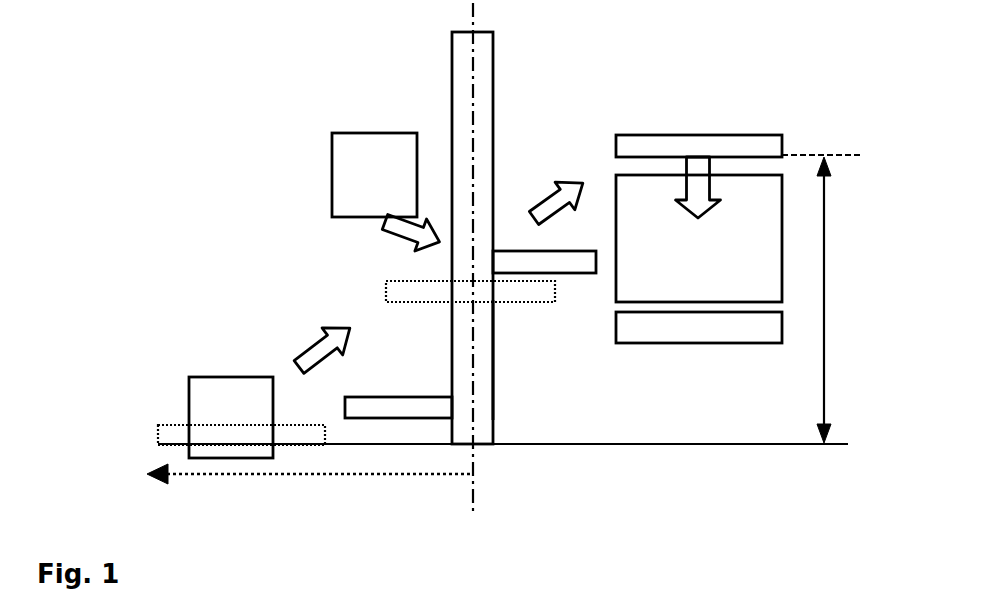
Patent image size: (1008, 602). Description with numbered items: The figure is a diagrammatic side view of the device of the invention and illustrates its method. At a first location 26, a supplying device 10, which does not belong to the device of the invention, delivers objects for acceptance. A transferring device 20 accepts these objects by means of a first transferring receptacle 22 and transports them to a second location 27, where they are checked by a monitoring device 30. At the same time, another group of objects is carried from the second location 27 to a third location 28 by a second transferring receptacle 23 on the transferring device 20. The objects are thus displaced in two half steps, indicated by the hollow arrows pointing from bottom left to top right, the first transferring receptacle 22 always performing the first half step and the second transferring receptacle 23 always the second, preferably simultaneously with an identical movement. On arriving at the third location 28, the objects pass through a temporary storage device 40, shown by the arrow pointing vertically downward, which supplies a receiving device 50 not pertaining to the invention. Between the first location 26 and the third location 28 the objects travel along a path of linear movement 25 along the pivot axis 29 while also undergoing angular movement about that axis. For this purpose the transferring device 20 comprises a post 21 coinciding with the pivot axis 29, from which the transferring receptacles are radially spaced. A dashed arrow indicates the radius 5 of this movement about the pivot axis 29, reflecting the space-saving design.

The radius 5 is at (330, 476).
The supplying device 10 is at (231, 417).
The transferring device 20 is at (502, 238).
The post 21 is at (485, 352).
The first transferring receptacle 22 is at (380, 405).
The second transferring receptacle 23 is at (580, 258).
The path of linear movement 25 is at (826, 305).
The first location 26 is at (172, 437).
The second location 27 is at (392, 295).
The third location 28 is at (775, 150).
The pivot axis 29 is at (473, 492).
The monitoring device 30 is at (374, 175).
The temporary storage device 40 is at (699, 238).
The receiving device 50 is at (683, 330).